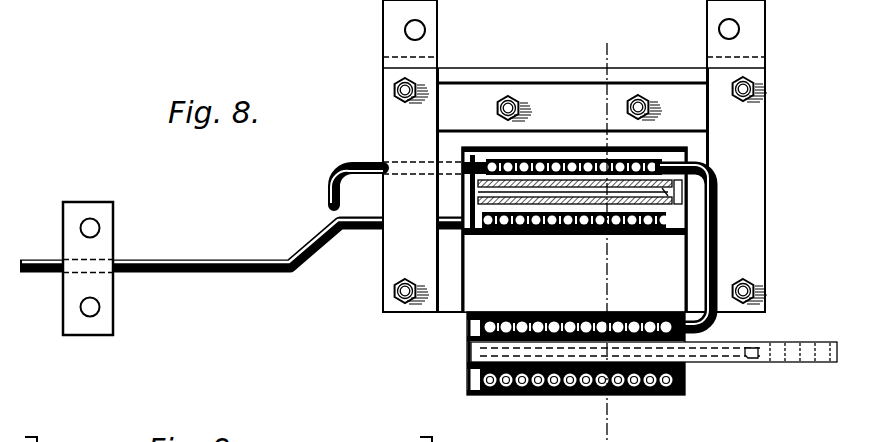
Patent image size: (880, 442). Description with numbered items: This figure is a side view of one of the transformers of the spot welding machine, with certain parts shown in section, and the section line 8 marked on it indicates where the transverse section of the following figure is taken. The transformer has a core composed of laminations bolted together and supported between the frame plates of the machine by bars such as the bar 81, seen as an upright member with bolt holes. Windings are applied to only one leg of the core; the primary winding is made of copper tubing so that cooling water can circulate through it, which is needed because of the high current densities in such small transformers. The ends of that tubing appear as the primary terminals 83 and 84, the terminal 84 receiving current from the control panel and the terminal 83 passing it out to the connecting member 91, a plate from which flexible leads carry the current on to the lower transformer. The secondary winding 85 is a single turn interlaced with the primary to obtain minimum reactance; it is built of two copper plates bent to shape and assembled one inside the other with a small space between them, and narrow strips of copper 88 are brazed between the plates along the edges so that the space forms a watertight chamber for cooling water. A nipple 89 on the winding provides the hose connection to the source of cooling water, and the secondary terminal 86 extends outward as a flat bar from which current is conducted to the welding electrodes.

The section line 8— 8 is at (590, 55).
The bar 81 is at (385, 20).
The primary winding terminal 83 is at (357, 231).
The primary winding terminal 84 is at (344, 172).
The secondary winding 85 is at (507, 234).
The secondary winding terminal 86 is at (792, 360).
The narrow copper strip 88 is at (478, 196).
The nipple 89 is at (752, 360).
The connecting member 91 is at (110, 318).